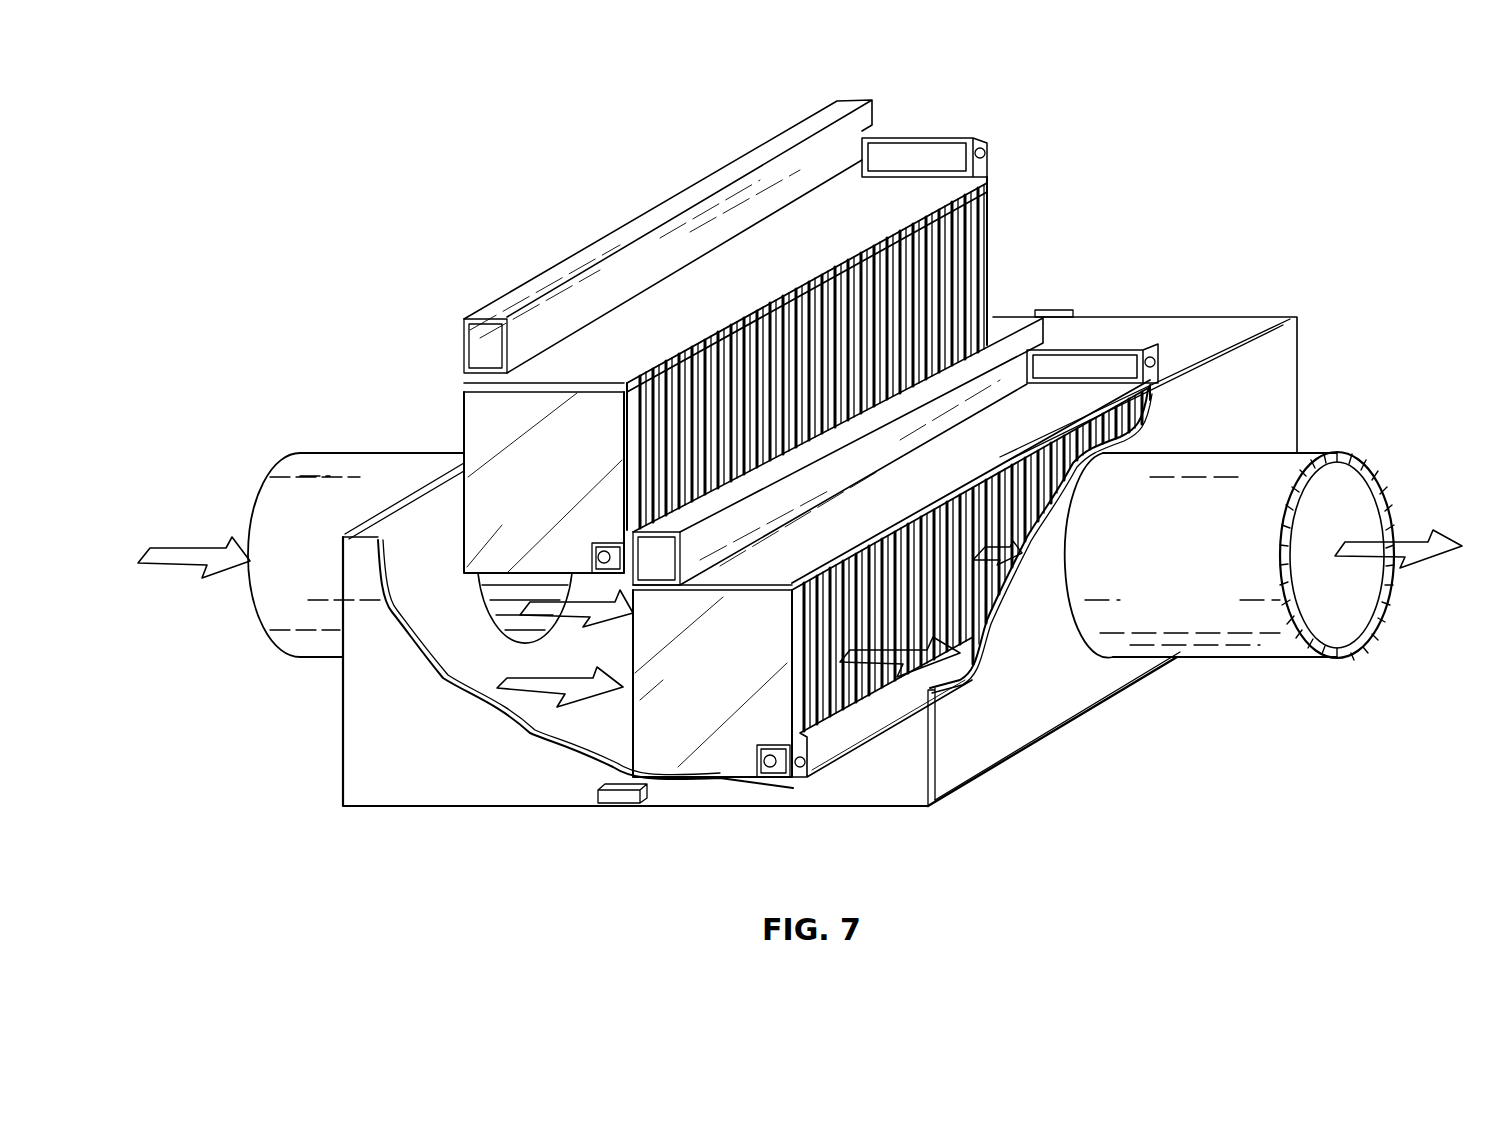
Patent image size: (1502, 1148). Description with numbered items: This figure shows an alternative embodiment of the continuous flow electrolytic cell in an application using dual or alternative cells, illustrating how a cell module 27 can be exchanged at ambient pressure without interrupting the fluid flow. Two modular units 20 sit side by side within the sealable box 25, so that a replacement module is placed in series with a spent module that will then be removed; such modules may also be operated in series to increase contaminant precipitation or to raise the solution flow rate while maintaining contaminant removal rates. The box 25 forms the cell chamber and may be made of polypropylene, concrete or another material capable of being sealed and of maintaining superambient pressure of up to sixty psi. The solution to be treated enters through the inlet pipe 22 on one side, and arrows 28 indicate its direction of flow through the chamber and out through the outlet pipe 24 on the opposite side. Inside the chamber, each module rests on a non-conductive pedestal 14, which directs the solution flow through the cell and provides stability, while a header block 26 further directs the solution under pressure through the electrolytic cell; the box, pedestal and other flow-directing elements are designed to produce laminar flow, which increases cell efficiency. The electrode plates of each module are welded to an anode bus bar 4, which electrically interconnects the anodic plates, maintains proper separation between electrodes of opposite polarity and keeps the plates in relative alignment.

The anode bus bar 4 is at (827, 720).
The non-conductive pedestal 14 is at (923, 687).
The filter unit 20 is at (614, 298).
The inlet pipe 22 is at (363, 478).
The outlet pipe 24 is at (1245, 478).
The sealable box 25 is at (422, 787).
The header block 26 is at (1068, 310).
The cell module 27 is at (497, 533).
The arrows 28 is at (185, 556).